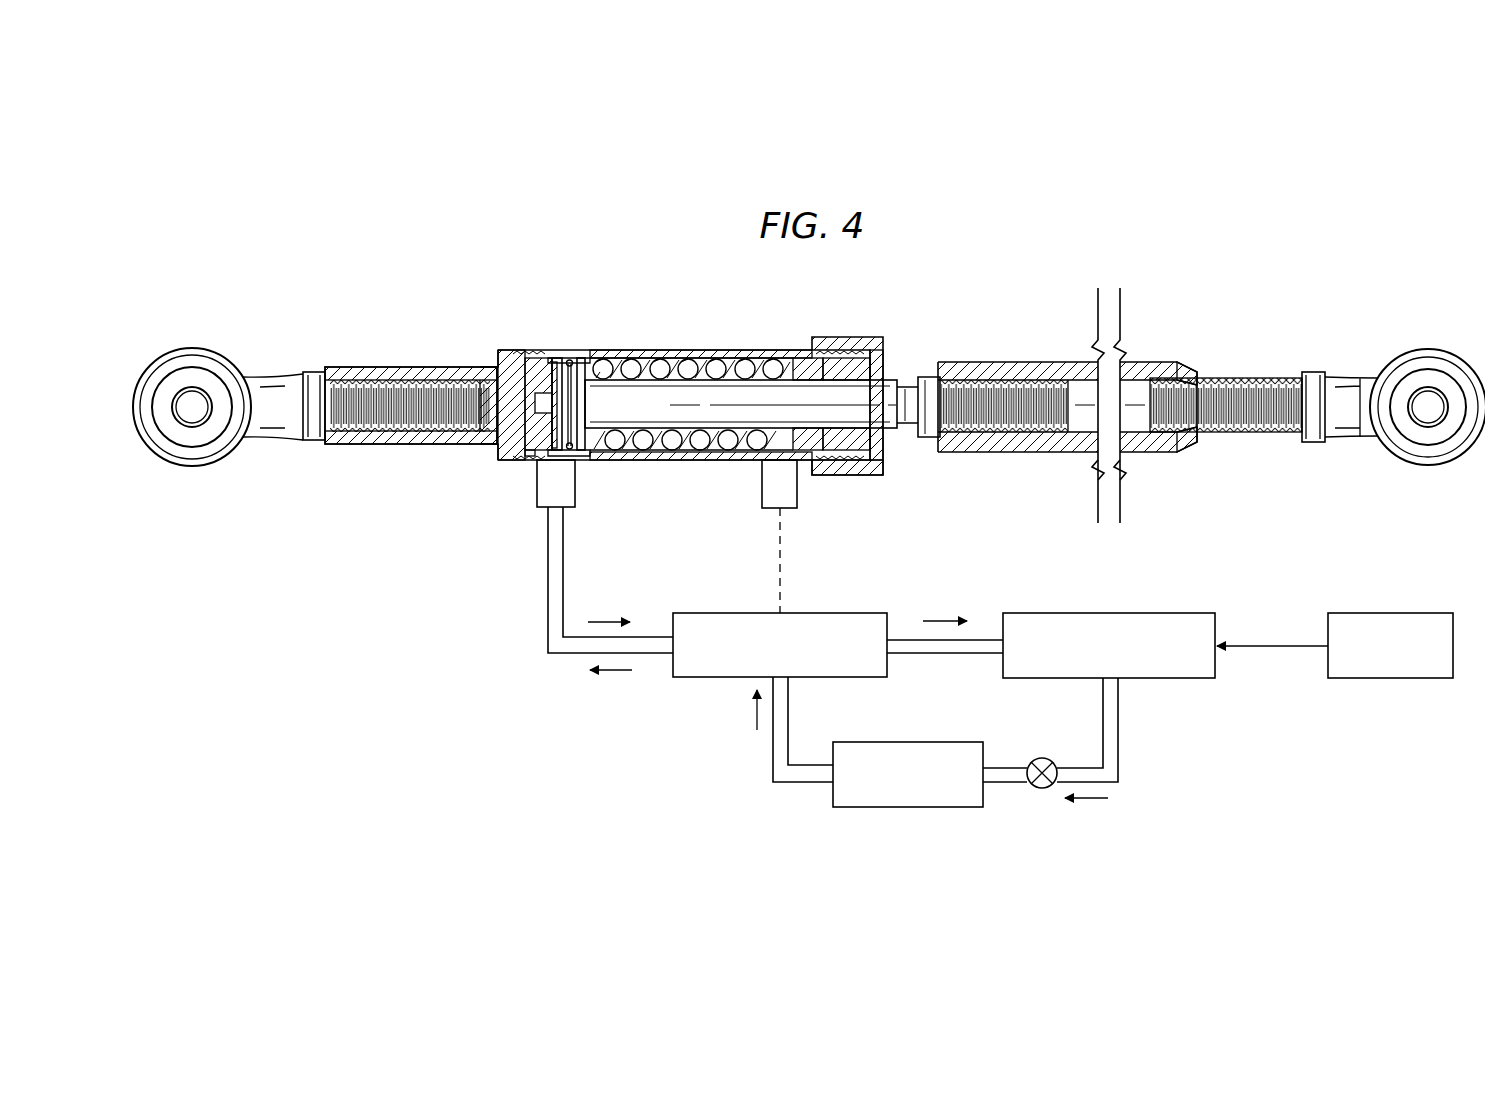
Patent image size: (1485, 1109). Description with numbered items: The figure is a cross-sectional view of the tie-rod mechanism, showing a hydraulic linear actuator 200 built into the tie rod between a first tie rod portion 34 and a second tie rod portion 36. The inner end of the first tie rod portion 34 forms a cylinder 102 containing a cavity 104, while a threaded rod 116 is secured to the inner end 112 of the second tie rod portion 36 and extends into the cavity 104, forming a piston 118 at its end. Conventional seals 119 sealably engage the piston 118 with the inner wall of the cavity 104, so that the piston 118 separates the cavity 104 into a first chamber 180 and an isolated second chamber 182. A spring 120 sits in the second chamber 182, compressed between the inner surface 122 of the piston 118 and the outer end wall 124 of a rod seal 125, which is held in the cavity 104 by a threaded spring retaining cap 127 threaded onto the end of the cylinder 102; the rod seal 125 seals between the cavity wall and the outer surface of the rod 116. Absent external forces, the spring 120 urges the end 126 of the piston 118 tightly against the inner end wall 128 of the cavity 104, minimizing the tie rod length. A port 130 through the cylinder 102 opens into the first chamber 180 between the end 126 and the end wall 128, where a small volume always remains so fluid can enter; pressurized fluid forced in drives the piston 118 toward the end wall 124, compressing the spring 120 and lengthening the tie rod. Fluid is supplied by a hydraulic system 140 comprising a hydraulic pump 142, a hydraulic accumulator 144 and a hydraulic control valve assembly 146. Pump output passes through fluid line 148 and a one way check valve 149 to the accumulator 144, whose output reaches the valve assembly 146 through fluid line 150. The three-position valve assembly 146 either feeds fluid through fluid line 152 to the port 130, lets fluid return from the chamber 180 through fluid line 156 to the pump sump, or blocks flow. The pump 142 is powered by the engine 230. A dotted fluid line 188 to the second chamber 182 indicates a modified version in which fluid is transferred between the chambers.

The hydraulic linear actuator 200 is at (942, 287).
The first tie rod portion 34 is at (413, 364).
The second tie rod portion 36 is at (1000, 361).
The cylinder 102 is at (665, 461).
The cavity 104 is at (632, 448).
The inner end 112 is at (1022, 453).
The threaded rod 116 is at (890, 378).
The piston 118 is at (582, 392).
The seals 119 is at (558, 360).
The spring 120 is at (745, 460).
The inner surface 122 is at (583, 362).
The outer end wall 124 is at (798, 360).
The rod seal 125 is at (836, 340).
The end 126 is at (520, 455).
The threaded spring retaining cap 127 is at (843, 476).
The inner end wall 128 is at (553, 462).
The port 130 is at (533, 498).
The hydraulic system 140 is at (712, 700).
The hydraulic pump 142 is at (1110, 613).
The hydraulic accumulator 144 is at (910, 808).
The hydraulic control valve assembly 146 is at (725, 613).
The fluid line 148 is at (1120, 730).
The one way check valve 149 is at (1045, 758).
The fluid line 150 is at (803, 783).
The fluid line 152 is at (547, 590).
The fluid line 156 is at (945, 656).
The first chamber 180 is at (537, 358).
The second chamber 182 is at (705, 358).
The fluid line 188 is at (781, 548).
The engine 230 is at (1390, 613).